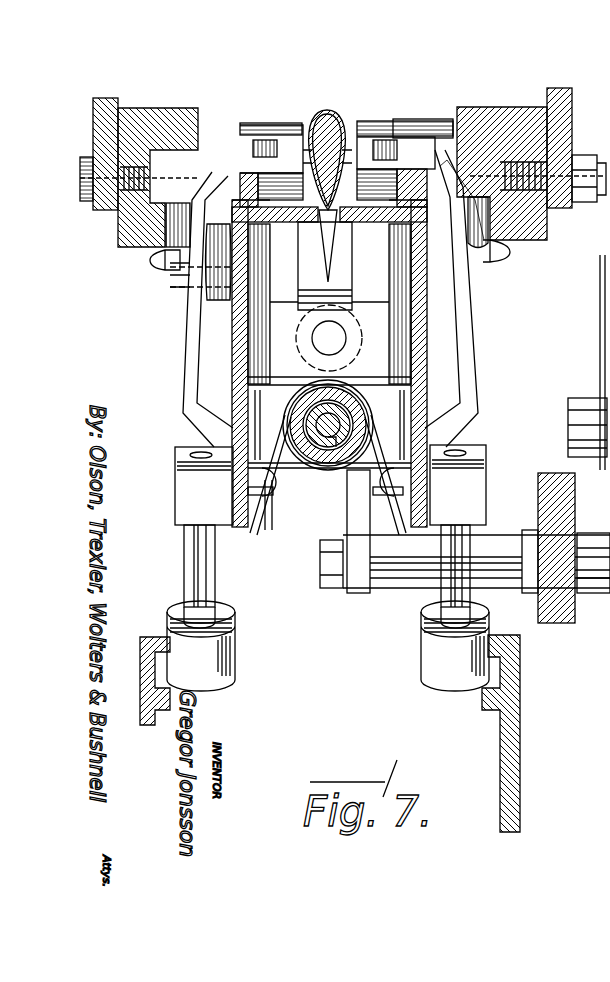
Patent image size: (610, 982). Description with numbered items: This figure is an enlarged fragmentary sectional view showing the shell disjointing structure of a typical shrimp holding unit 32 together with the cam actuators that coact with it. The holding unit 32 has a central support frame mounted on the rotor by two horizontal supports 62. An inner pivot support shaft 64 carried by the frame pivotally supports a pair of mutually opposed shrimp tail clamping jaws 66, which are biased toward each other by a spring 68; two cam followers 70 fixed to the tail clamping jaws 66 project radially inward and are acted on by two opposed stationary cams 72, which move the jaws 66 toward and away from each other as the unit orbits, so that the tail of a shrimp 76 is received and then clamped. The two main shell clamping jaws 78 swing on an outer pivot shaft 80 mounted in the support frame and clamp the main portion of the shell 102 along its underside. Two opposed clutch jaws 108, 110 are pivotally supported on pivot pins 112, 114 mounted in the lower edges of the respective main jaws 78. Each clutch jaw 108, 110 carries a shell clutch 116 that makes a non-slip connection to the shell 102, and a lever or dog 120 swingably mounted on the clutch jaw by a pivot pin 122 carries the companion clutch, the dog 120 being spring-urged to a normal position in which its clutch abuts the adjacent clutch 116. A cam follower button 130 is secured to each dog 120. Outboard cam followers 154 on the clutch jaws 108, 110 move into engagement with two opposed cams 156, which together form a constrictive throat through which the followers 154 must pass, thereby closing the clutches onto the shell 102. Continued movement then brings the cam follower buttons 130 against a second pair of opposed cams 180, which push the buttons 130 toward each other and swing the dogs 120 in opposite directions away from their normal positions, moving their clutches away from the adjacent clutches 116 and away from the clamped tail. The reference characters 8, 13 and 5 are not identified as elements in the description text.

The section line 8- 8 is at (314, 95).
The second pair of opposed cams 180 is at (202, 108).
The adjusting nut 13 is at (572, 118).
The lever or dog 120 is at (237, 152).
The cam follower button 130 is at (237, 163).
The shell of the shrimp 102 is at (308, 143).
The pivot pin 122 is at (275, 126).
The shrimp 76 is at (365, 114).
The shell engaging elements or shell clutches 116 is at (405, 128).
The main shell clamping jaws 78 is at (457, 167).
The outboard cam followers 154 is at (495, 186).
The clutch jaw 108 is at (193, 333).
The clutch jaw 110 is at (467, 342).
The shrimp holding unit 32 is at (487, 365).
The opposed cams 156 is at (163, 252).
The outer pivot shaft 80 is at (326, 340).
The inner pivot support shaft 64 is at (366, 466).
The spring 68 is at (322, 473).
The pivot pin 112 is at (277, 520).
The pivot pin 114 is at (327, 528).
The cam followers 70 is at (223, 611).
The horizontal supports 62 is at (405, 580).
The cam plate 5 is at (576, 510).
The shrimp tail clamping jaws 66 is at (600, 302).
The stationary cams 72 is at (178, 625).